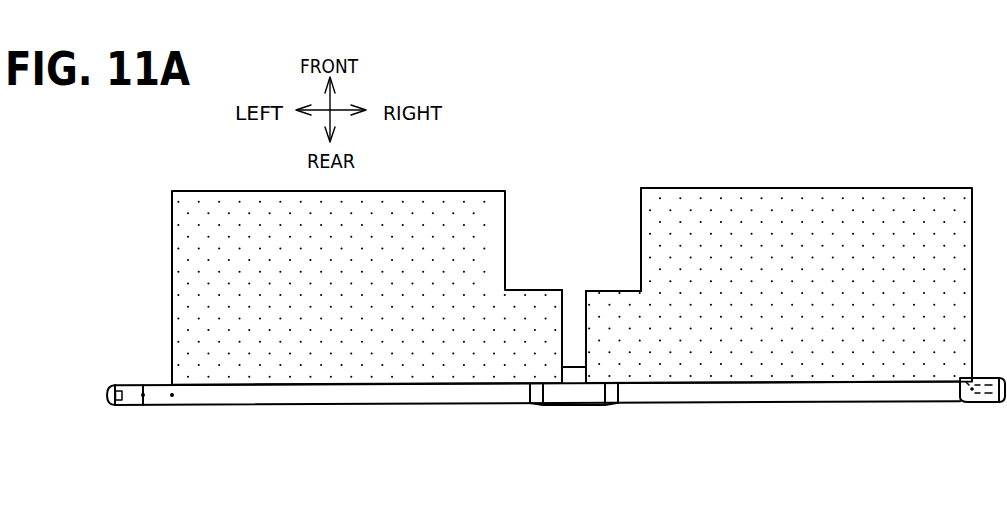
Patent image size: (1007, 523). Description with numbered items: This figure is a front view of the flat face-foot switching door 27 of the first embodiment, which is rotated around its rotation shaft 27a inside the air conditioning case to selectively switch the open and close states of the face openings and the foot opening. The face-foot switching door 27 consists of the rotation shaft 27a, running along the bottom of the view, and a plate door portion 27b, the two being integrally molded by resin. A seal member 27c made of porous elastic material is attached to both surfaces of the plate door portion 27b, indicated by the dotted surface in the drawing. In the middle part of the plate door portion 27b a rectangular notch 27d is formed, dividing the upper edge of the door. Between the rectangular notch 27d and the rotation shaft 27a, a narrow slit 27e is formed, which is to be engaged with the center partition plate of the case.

The face-foot switching door 27 is at (735, 407).
The rotation shaft 27a is at (823, 390).
The plate door portion 27b is at (567, 259).
The seal member 27c is at (843, 210).
The rectangular notch 27d is at (641, 228).
The slit 27e is at (569, 340).